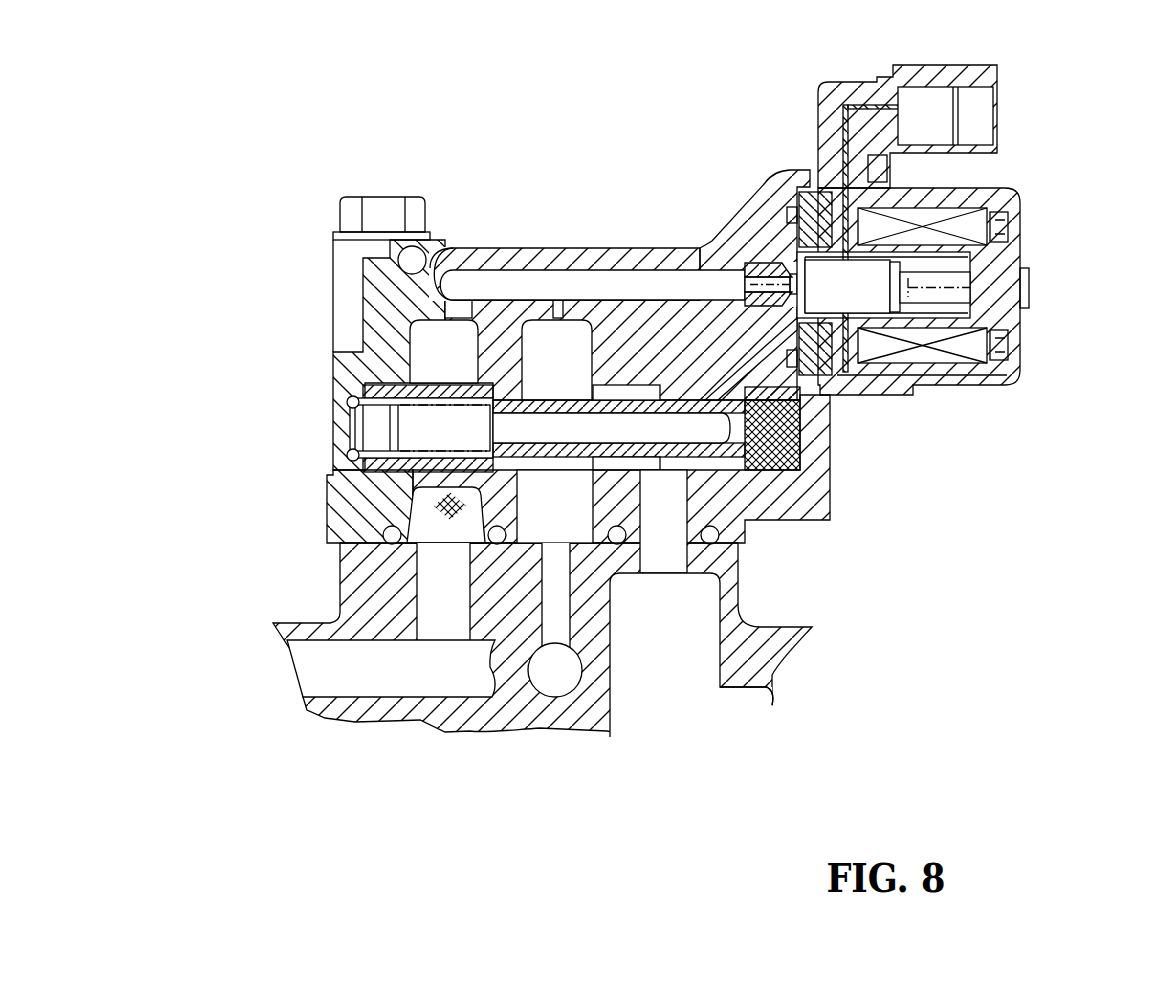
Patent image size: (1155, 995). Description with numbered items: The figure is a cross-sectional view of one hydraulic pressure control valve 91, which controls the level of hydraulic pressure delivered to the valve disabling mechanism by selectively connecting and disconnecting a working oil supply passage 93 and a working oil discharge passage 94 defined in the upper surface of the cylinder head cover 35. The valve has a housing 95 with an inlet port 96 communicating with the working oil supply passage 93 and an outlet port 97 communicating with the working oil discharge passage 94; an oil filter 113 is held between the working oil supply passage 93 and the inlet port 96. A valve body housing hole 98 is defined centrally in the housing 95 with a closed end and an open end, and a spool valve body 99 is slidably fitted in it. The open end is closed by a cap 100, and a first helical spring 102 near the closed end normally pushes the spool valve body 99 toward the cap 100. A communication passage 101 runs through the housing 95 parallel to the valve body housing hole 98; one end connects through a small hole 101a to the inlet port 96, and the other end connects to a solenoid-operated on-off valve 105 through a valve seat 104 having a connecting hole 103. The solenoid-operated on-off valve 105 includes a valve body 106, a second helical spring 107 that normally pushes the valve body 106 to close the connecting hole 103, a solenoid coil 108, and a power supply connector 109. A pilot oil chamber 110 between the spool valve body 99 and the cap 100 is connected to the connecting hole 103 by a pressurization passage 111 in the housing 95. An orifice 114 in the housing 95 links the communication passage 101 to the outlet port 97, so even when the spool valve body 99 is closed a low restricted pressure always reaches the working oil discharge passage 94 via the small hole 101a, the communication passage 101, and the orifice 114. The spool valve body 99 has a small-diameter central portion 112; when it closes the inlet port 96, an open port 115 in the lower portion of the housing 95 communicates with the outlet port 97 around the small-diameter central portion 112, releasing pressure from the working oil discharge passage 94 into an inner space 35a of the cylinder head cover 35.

The hydraulic pressure control valve 91 is at (276, 141).
The working oil supply passage 93 is at (395, 668).
The working oil discharge passage 94 is at (557, 673).
The housing 95 is at (383, 298).
The inlet port 96 is at (433, 485).
The outlet port 97 is at (548, 497).
The valve body housing hole 98 is at (607, 393).
The spool valve body 99 is at (445, 382).
The cap 100 is at (805, 468).
The communication passage 101 is at (508, 278).
The small hole 101a is at (455, 307).
The first helical spring 102 is at (345, 418).
The connecting hole 103 is at (702, 243).
The valve seat 104 is at (768, 200).
The solenoid-operated on-off valve 105 is at (1046, 94).
The valve body 106 is at (840, 300).
The second helical spring 107 is at (937, 275).
The solenoid coil 108 is at (965, 225).
The power supply connector 109 is at (975, 120).
The pilot oil chamber 110 is at (775, 440).
The pressurization passage 111 is at (800, 403).
The small-diameter central portion 112 is at (657, 520).
The oil filter 113 is at (447, 508).
The orifice 114 is at (556, 318).
The open port 115 is at (670, 573).
The cylinder head cover 35 is at (380, 597).
The inner space 35a is at (705, 653).